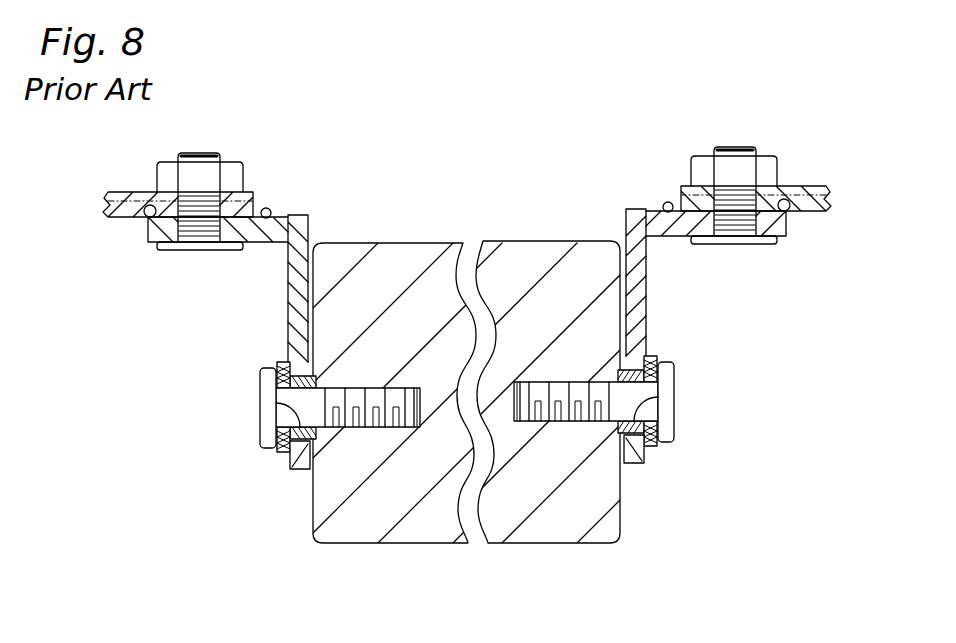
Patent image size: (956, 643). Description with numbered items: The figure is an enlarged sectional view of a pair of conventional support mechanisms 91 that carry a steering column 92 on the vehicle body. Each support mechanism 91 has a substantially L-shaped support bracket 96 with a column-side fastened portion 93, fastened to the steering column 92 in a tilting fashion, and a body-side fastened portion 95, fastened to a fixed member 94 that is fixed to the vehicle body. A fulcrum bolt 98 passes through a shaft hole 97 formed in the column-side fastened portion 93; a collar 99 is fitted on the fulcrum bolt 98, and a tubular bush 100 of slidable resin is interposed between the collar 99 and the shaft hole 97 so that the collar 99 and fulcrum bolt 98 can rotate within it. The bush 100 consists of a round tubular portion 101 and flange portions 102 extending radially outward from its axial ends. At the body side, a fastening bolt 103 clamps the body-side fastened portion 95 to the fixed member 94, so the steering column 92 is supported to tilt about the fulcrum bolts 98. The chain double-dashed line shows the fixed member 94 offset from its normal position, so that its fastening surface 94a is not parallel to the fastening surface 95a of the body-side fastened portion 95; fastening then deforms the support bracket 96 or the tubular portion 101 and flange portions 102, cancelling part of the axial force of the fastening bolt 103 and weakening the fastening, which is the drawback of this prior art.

The support mechanism 91 is at (462, 236).
The steering column 92 is at (410, 243).
The column-side fastened portion 93 is at (288, 298).
The fixed member 94 is at (156, 196).
The fastening surface 94a is at (264, 209).
The body-side fastened portion 95 is at (158, 245).
The fastening surface 95a is at (146, 218).
The support bracket 96 is at (309, 215).
The shaft hole 97 is at (318, 381).
The fulcrum bolt 98 is at (262, 406).
The collar 99 is at (280, 454).
The tubular bush 100 is at (278, 364).
The round tubular portion 101 is at (270, 398).
The flange portion 102 is at (312, 460).
The fastening bolt 103 is at (200, 252).